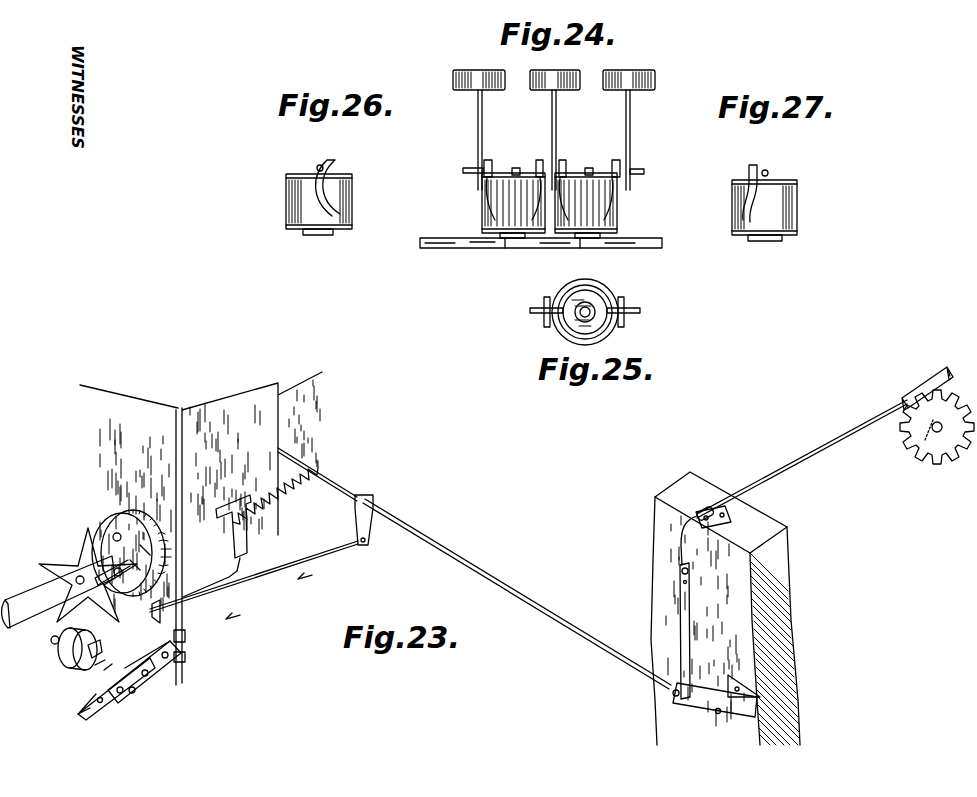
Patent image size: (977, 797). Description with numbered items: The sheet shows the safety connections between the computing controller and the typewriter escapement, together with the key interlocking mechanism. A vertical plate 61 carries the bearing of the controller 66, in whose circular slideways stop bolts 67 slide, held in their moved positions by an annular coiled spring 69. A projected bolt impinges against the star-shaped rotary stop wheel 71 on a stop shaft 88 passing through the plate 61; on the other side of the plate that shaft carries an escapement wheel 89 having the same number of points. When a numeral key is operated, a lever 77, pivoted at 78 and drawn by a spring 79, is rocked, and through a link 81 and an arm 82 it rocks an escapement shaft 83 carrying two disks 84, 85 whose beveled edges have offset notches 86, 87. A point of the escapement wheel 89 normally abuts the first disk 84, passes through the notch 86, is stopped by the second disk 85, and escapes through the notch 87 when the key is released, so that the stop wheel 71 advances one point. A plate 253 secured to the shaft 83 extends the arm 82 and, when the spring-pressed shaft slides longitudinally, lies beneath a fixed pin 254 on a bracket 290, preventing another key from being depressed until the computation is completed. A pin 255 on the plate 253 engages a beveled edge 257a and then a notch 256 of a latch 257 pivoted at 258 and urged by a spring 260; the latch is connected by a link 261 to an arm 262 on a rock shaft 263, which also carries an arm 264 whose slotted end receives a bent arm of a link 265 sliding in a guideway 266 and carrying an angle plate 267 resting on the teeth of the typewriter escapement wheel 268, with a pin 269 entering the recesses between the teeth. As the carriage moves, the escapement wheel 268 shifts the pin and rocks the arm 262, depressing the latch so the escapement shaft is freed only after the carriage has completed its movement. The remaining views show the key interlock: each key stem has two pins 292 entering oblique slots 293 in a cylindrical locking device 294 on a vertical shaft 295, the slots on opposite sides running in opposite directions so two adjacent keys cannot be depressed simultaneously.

In FIG. 23, the vertical plate 61 is at (201, 528).
In FIG. 23, the controller 66 is at (152, 552).
In FIG. 23, the stop bolts 67 is at (110, 512).
In FIG. 23, the annular coiled spring 69 is at (130, 514).
In FIG. 23, the rotary stop wheel 71 is at (133, 556).
In FIG. 23, the lever 77 is at (246, 528).
In FIG. 23, the pivot 78 is at (310, 454).
In FIG. 23, the spring 79 is at (318, 480).
In FIG. 23, the link 81 is at (200, 590).
In FIG. 23, the arm 82 is at (96, 668).
In FIG. 23, the escapement shaft 83 is at (106, 672).
In FIG. 23, the first disk 84 is at (76, 672).
In FIG. 23, the second disk 85 is at (60, 662).
In FIG. 23, the notch 86 is at (94, 642).
In FIG. 23, the notch 87 is at (52, 642).
In FIG. 23, the stop shaft 88 is at (112, 532).
In FIG. 23, the escapement wheel 89 is at (52, 560).
In FIG. 23, the plate 253 is at (150, 686).
In FIG. 23, the fixed pin 254 is at (164, 676).
In FIG. 23, the pin 255 is at (104, 705).
In FIG. 23, the notch 256 is at (92, 704).
In FIG. 23, the latch 257 is at (130, 705).
In FIG. 23, the beveled edge 257a is at (80, 710).
In FIG. 23, the pivot 258 is at (187, 660).
In FIG. 23, the spring 260 is at (186, 638).
In FIG. 23, the link 261 is at (260, 596).
In FIG. 23, the arm 262 is at (372, 540).
In FIG. 23, the rock shaft 263 is at (500, 572).
In FIG. 23, the arm 264 is at (678, 648).
In FIG. 23, the link 265 is at (762, 481).
In FIG. 23, the guideway 266 is at (705, 505).
In FIG. 23, the angle plate 267 is at (929, 384).
In FIG. 23, the escapement wheel of the typewriter 268 is at (926, 462).
In FIG. 23, the pin 269 is at (960, 378).
In FIG. 23, the bracket 290 is at (140, 697).
In FIG. 24, the pins 292 is at (660, 164).
In FIG. 26, the pins 292 is at (320, 165).
In FIG. 27, the pins 292 is at (768, 171).
In FIG. 25, the pins 292 is at (626, 314).
In FIG. 24, the oblique slots 293 is at (620, 212).
In FIG. 26, the oblique slots 293 is at (338, 202).
In FIG. 27, the oblique slots 293 is at (742, 202).
In FIG. 25, the oblique slots 293 is at (614, 298).
In FIG. 24, the cylindrical locking device 294 is at (618, 226).
In FIG. 26, the cylindrical locking device 294 is at (288, 200).
In FIG. 27, the cylindrical locking device 294 is at (797, 212).
In FIG. 25, the cylindrical locking device 294 is at (604, 294).
In FIG. 24, the vertical shaft 295 is at (516, 168).